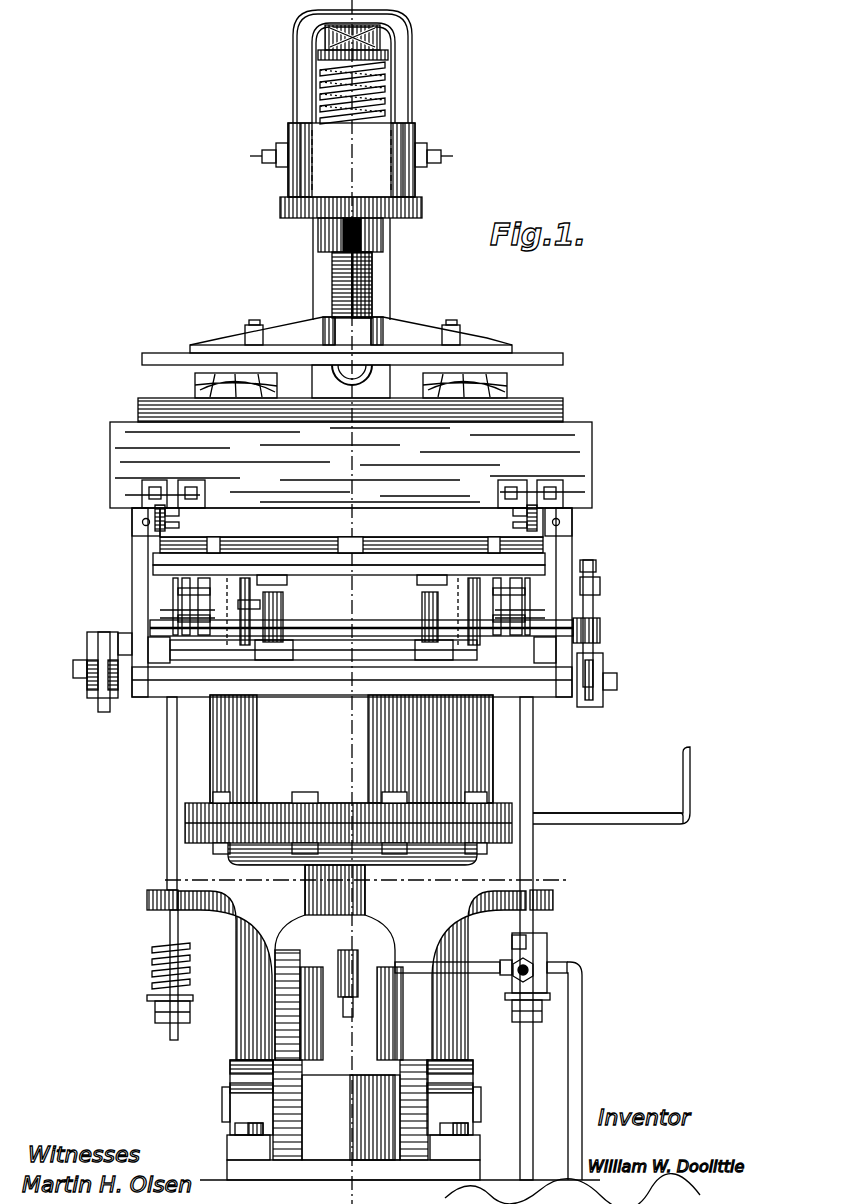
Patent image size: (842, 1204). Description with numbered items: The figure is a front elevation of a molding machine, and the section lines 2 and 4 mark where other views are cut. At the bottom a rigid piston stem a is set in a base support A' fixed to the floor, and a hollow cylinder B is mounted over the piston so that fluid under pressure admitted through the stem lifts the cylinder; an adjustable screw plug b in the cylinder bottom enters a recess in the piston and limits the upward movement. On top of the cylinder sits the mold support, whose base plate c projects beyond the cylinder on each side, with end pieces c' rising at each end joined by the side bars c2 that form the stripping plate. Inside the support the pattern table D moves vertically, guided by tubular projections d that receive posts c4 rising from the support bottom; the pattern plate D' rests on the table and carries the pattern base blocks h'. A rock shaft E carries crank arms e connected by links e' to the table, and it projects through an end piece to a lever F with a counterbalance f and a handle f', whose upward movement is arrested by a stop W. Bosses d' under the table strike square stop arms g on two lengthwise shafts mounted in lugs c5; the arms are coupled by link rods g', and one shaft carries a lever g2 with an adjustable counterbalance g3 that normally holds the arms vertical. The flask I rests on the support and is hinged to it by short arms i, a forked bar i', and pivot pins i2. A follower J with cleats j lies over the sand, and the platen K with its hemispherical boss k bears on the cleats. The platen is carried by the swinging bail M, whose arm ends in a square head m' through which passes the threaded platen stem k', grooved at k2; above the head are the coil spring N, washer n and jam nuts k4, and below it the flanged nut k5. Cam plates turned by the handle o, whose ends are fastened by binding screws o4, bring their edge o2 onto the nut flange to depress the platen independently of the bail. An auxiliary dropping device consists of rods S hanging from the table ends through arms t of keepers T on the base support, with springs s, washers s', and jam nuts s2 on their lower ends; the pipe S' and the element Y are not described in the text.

The section line 2 is at (381, 1).
The handle o is at (295, 66).
The jam nuts k4 is at (385, 42).
The washer n is at (388, 57).
The coil spring N is at (390, 88).
The square head m' is at (351, 160).
The cam plate edge o2 is at (290, 135).
The binding screws o4 is at (443, 158).
The flanged nut k5 is at (423, 208).
The bail M is at (313, 250).
The platen stem k' is at (316, 285).
The grooves k2 is at (372, 274).
The hemispherical boss k is at (326, 348).
The platen K is at (410, 360).
The cleats j is at (195, 385).
The follower J is at (563, 415).
The flask I is at (351, 465).
The short arms i is at (352, 477).
The forked bar i' is at (354, 477).
The pivot pins i2 is at (178, 520).
The end pieces c' is at (347, 587).
The side bars c2 is at (272, 522).
The base blocks h' is at (351, 533).
The pattern plate D' is at (316, 554).
The pattern table D is at (310, 582).
The tubular projections d is at (351, 606).
The links e' is at (359, 580).
The crank arms e is at (342, 607).
The bosses d' is at (352, 591).
The link rods g' is at (273, 599).
The stop arms g is at (354, 659).
The rock shaft E is at (633, 626).
The lugs c5 is at (410, 660).
The posts c4 is at (220, 655).
The base plate c is at (352, 700).
The adjustable counterbalance g3 is at (93, 678).
The lever g2 is at (104, 712).
The stop W is at (598, 590).
The handle f' is at (606, 575).
The lever F is at (600, 650).
The counterbalance f is at (621, 672).
The hollow cylinder B is at (210, 700).
The piston stem a is at (185, 670).
The rods S is at (156, 793).
The pipe S' is at (605, 938).
The section line 4 is at (368, 875).
The horizontal arms t is at (147, 905).
The springs s is at (360, 975).
The washers s' is at (365, 993).
The jam nuts s2 is at (155, 1015).
The keepers T is at (235, 1040).
The screw plug b is at (360, 975).
The pipe Y is at (485, 960).
The base support A' is at (400, 1120).